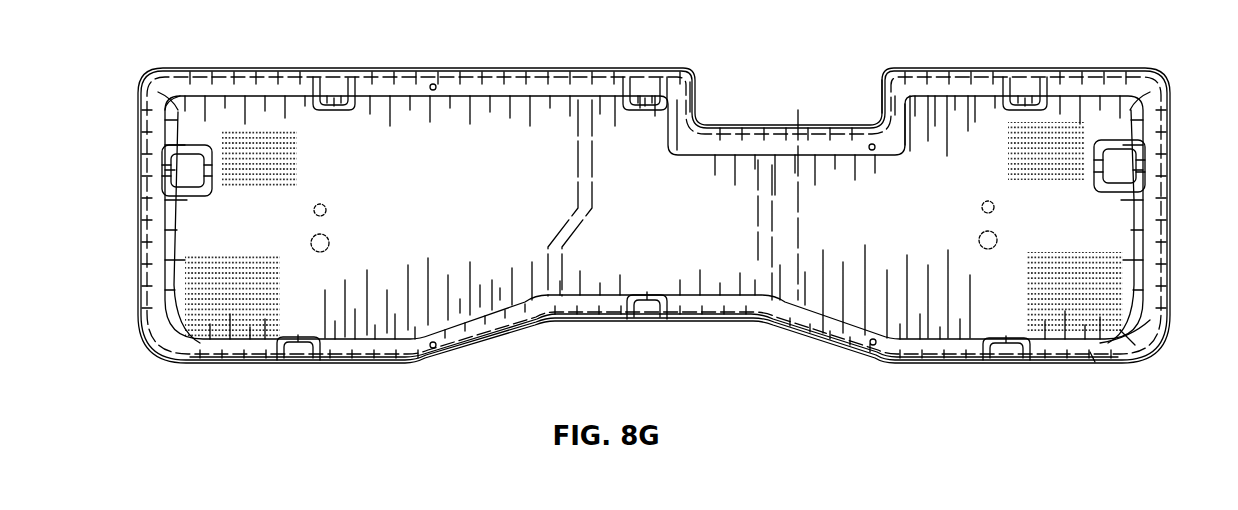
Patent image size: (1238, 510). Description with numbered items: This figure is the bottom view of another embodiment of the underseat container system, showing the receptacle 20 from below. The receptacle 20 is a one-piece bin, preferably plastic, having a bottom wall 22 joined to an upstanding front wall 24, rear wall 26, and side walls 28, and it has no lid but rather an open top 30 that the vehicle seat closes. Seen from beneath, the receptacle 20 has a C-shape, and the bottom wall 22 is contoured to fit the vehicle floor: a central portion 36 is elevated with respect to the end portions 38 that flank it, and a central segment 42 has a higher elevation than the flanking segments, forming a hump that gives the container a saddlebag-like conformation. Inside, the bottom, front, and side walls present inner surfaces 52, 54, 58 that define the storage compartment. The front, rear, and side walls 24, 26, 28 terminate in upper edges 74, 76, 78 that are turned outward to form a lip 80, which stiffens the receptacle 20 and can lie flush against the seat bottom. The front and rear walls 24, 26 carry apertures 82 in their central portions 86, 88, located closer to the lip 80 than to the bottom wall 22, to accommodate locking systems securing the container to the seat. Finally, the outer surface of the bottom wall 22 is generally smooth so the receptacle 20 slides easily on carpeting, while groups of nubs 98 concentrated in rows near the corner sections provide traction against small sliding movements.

The receptacle 20 is at (184, 43).
The bottom wall 22 is at (720, 300).
The front wall 24 is at (604, 66).
The rear wall 26 is at (410, 365).
The side walls 28 is at (137, 243).
The open top 30 is at (1152, 277).
The central portion 36 is at (586, 298).
The end portions 38 is at (177, 110).
The central segment 42 is at (722, 158).
The inner surface of bottom wall 52 is at (378, 318).
The inner surface of front wall 54 is at (983, 80).
The inner surfaces of side walls 58 is at (1152, 243).
The upper edge of front wall 74 is at (845, 122).
The upper edge of rear wall 76 is at (505, 345).
The upper edges of side walls 78 is at (1166, 158).
The lip 80 is at (1152, 336).
The apertures 82 is at (436, 84).
The central portion of front wall 86 is at (524, 83).
The central portion of rear wall 88 is at (912, 350).
The nubs 98 is at (298, 160).